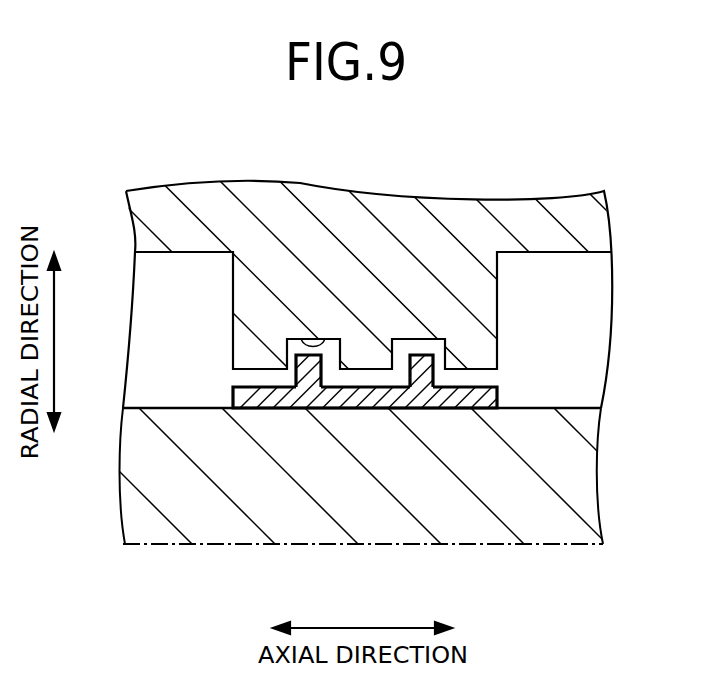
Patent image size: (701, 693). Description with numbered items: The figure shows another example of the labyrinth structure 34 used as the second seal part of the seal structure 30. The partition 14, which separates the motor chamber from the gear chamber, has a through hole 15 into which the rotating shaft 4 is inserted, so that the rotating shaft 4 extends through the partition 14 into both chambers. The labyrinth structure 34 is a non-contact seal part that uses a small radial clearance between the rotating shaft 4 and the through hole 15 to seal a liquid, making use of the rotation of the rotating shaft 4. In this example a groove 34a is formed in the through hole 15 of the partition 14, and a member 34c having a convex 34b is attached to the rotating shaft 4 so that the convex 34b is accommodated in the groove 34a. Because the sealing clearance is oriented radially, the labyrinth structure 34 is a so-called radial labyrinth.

The seal structure 30 is at (610, 154).
The partition 14 is at (542, 223).
The rotating shaft 4 is at (537, 473).
The labyrinth structure 34 is at (314, 372).
The groove 34a is at (300, 340).
The convex 34b is at (310, 366).
The member 34c is at (397, 395).
The through hole 15 is at (370, 368).